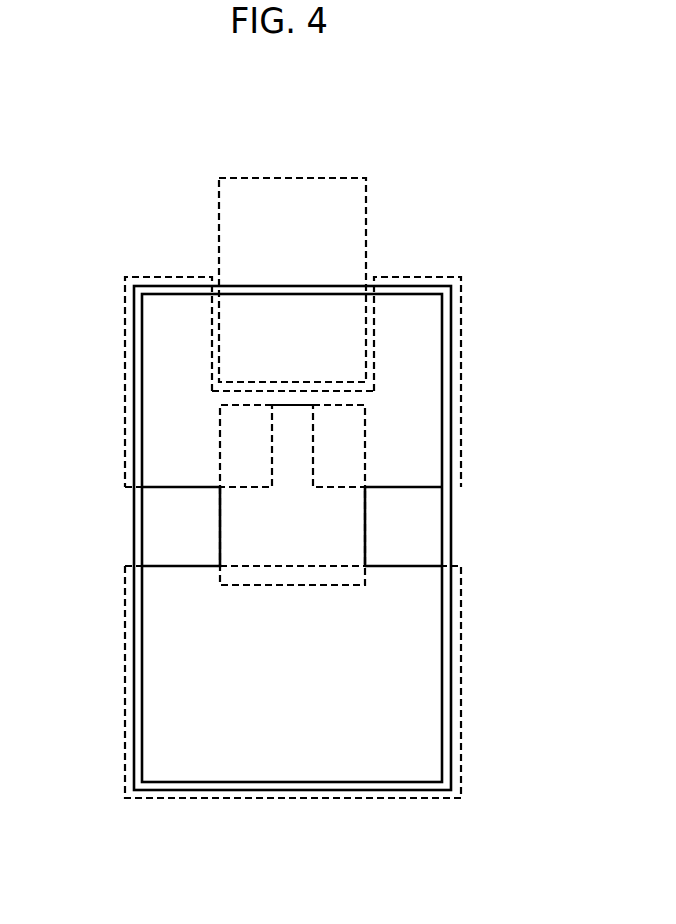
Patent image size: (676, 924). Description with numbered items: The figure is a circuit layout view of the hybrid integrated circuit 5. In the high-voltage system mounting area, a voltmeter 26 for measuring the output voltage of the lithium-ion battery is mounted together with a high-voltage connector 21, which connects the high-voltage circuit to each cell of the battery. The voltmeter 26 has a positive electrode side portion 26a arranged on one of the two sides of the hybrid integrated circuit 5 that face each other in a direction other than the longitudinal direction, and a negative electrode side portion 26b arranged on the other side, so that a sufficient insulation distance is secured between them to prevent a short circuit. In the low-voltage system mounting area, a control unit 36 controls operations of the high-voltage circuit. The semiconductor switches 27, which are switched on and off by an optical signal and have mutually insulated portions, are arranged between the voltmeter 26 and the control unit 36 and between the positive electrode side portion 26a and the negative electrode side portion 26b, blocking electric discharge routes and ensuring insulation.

The hybrid integrated circuit 5 is at (132, 777).
The high-voltage connector 21 is at (312, 200).
The voltmeter 26 is at (487, 410).
The positive electrode side portion 26a is at (175, 330).
The negative electrode side portion 26b is at (406, 329).
The semiconductor switches 27 is at (347, 535).
The control unit 36 is at (475, 749).